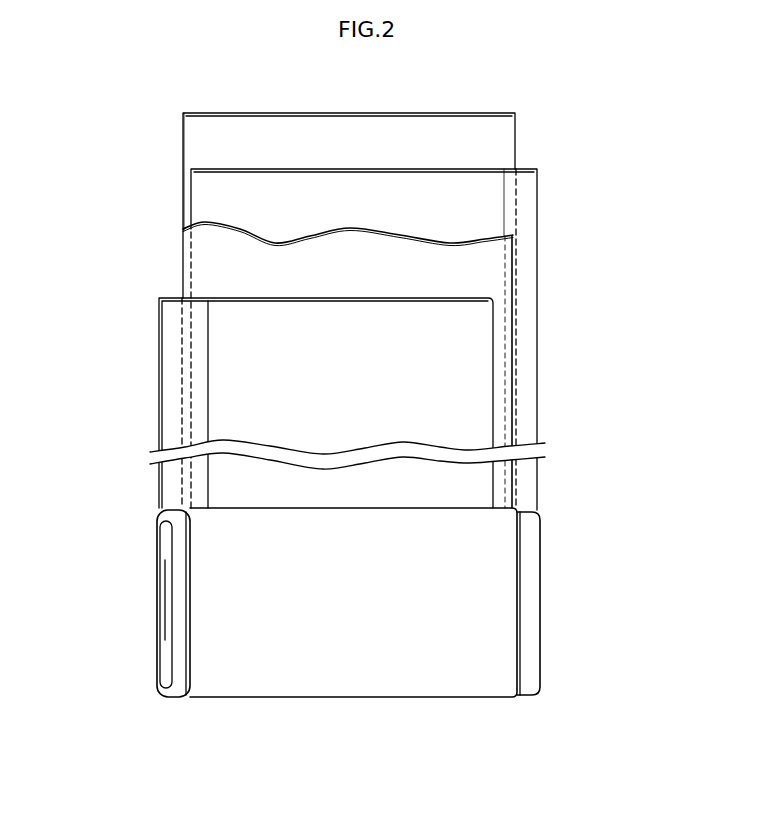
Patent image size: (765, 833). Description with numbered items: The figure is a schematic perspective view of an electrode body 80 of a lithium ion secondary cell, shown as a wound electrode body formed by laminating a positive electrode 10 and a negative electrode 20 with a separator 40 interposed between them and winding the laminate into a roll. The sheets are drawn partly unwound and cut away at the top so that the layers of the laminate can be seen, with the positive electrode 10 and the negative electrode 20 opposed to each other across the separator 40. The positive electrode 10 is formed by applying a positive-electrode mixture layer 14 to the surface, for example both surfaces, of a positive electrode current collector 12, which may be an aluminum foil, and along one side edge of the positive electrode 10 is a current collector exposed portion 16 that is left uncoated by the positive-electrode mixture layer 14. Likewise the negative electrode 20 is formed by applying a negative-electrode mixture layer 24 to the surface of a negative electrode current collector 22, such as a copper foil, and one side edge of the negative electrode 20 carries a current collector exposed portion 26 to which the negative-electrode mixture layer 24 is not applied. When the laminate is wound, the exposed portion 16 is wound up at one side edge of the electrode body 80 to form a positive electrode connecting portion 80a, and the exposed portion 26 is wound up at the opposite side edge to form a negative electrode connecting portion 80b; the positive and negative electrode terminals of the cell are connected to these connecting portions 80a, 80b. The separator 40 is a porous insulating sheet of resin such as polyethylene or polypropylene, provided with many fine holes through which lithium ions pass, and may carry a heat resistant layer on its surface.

The positive electrode 10 is at (158, 370).
The positive electrode current collector 12 is at (158, 437).
The positive-electrode mixture layer 14 is at (220, 320).
The current collector exposed portion 16 is at (175, 405).
The negative electrode 20 is at (538, 245).
The negative electrode current collector 22 is at (537, 347).
The negative-electrode mixture layer 24 is at (500, 193).
The current collector exposed portion 26 is at (523, 315).
The separator 40 is at (203, 131).
The electrode body 80 is at (410, 677).
The positive electrode connecting portion 80a is at (172, 693).
The negative electrode connecting portion 80b is at (527, 693).